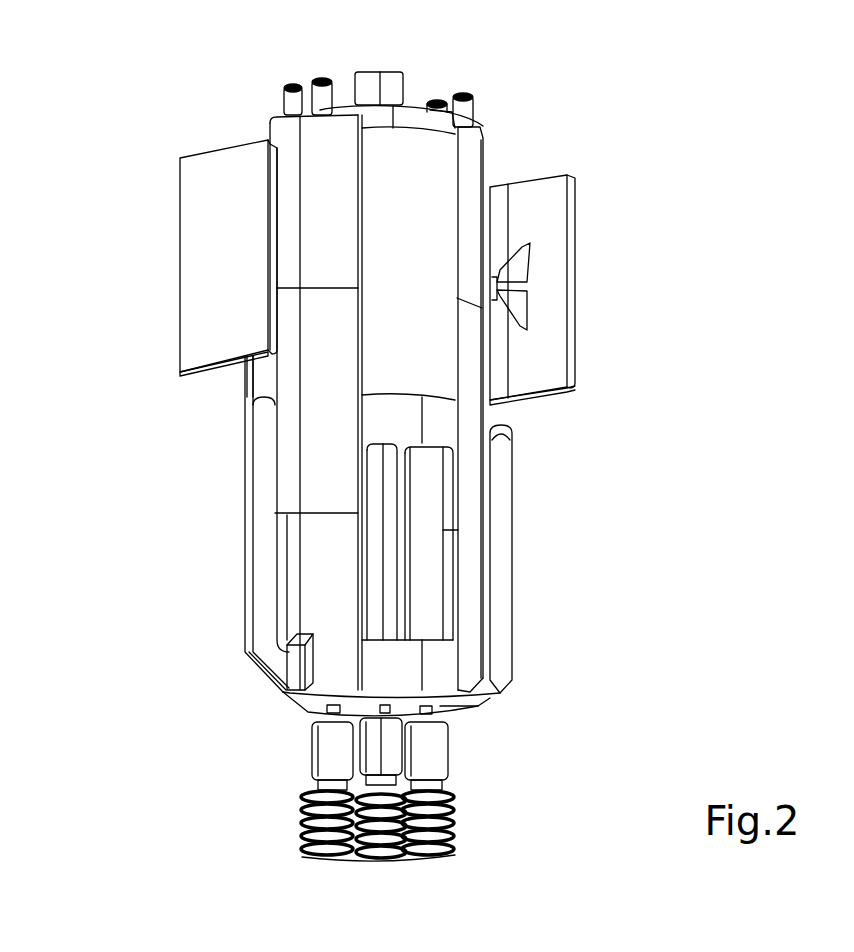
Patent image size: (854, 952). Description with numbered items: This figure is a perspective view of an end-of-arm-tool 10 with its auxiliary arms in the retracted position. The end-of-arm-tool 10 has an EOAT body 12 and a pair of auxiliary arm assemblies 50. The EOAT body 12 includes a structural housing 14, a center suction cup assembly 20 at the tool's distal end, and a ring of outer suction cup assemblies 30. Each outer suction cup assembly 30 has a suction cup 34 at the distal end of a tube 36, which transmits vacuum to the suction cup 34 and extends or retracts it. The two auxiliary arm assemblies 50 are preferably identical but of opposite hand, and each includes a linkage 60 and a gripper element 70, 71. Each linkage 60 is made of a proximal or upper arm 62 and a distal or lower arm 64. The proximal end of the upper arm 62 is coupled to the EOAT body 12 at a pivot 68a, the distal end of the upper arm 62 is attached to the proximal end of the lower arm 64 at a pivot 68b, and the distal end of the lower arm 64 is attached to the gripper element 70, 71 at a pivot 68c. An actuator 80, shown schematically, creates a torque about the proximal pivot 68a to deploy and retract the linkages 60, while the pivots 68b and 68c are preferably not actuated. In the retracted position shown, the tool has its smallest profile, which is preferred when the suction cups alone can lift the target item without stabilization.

The end-of-arm-tool 10 is at (616, 39).
The EOAT body 12 is at (452, 132).
The structural housing 14 is at (478, 170).
The center suction cup assembly 20 is at (393, 858).
The outer suction cup assembly 30 is at (443, 850).
The suction cup 34 is at (443, 850).
The tube 36 is at (448, 720).
The auxiliary arm assembly 50 is at (494, 109).
The linkage 60 is at (117, 447).
The upper arm 62 is at (266, 527).
The lower arm 64 is at (265, 384).
The proximal pivot 68a is at (455, 712).
The pivot 68b is at (502, 438).
The pivot 68c is at (497, 284).
The gripper element 70 is at (203, 277).
The side plate 71 is at (203, 277).
The actuator 80 is at (283, 694).